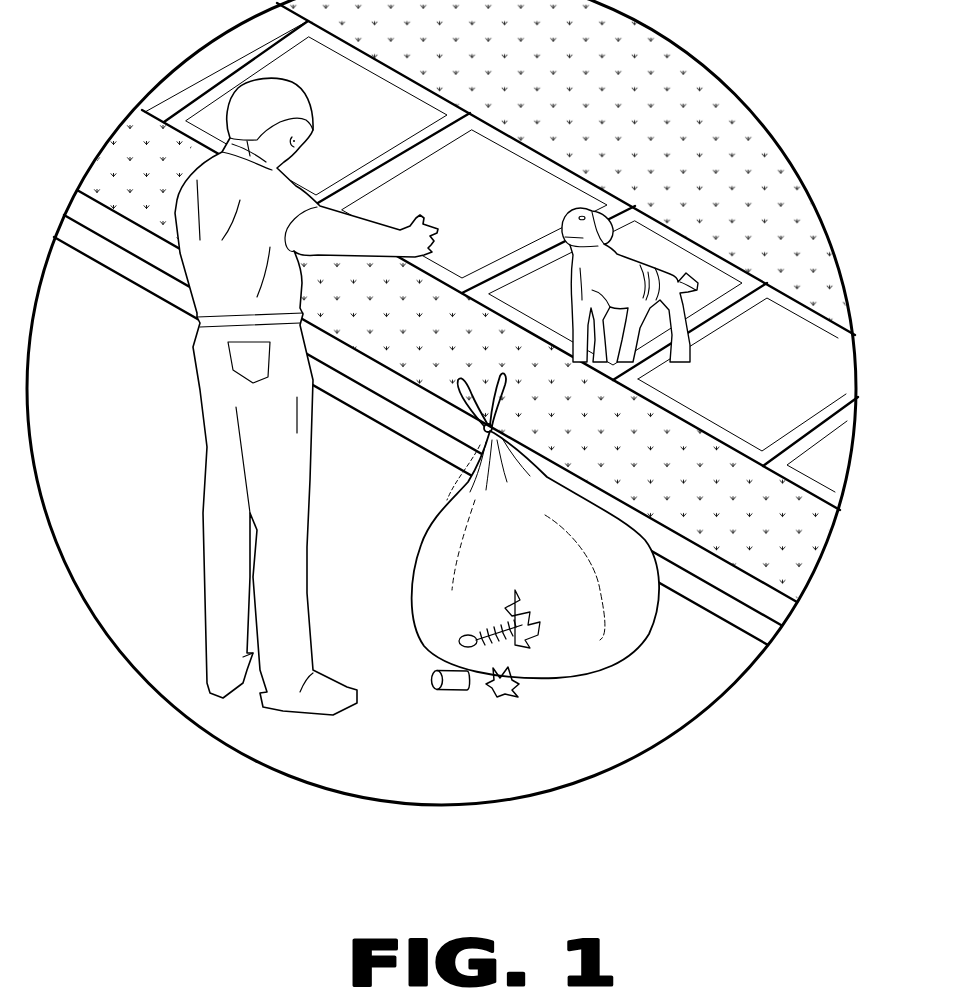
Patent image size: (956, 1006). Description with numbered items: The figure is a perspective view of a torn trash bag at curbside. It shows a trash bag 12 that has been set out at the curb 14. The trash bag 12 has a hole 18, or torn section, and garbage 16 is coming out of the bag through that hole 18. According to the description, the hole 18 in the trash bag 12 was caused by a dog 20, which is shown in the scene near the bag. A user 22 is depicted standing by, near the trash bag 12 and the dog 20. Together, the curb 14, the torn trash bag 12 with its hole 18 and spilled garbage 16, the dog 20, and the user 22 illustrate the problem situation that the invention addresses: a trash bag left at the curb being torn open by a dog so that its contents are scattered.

The trash bag 12 is at (491, 552).
The curb 14 is at (778, 612).
The garbage 16 is at (497, 688).
The hole 18 is at (527, 677).
The dog 20 is at (562, 226).
The user 22 is at (215, 452).